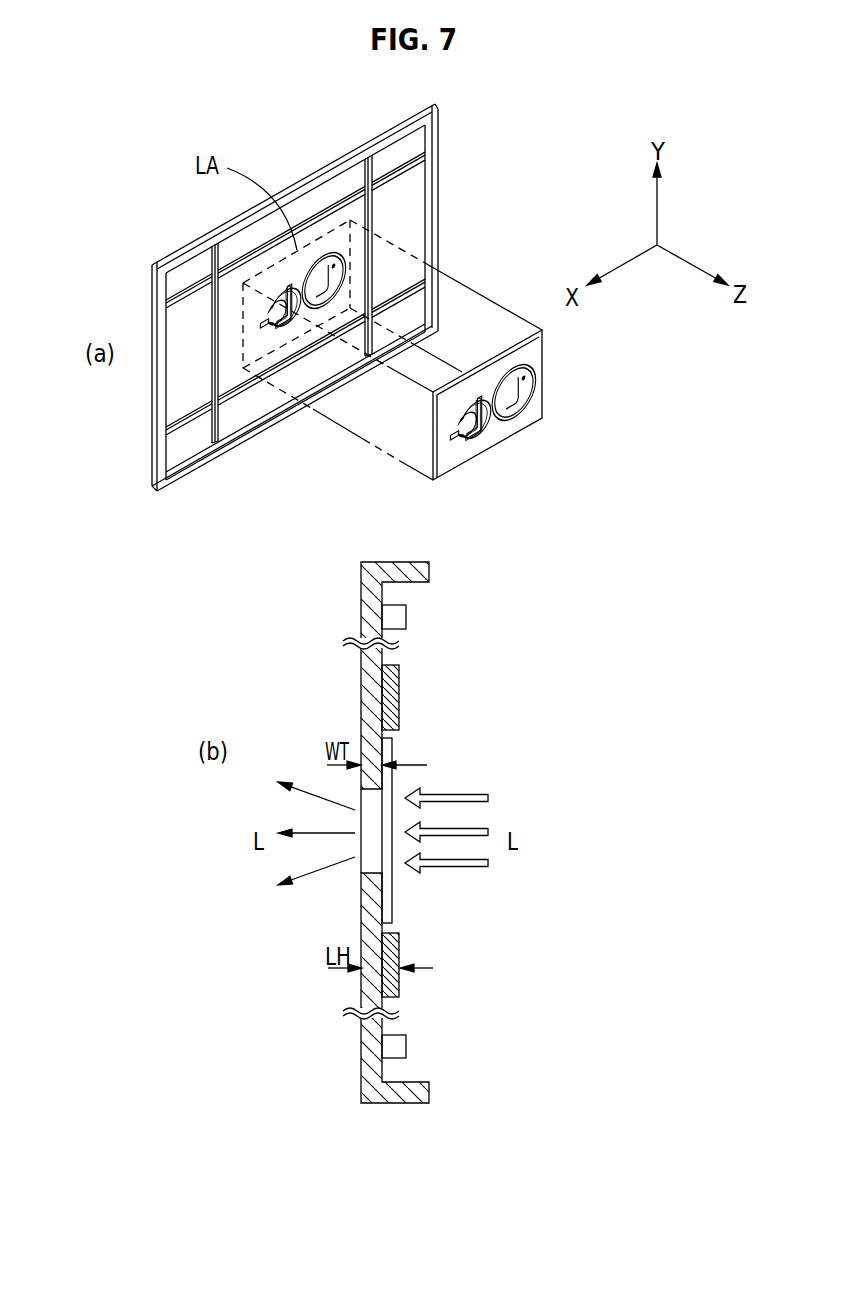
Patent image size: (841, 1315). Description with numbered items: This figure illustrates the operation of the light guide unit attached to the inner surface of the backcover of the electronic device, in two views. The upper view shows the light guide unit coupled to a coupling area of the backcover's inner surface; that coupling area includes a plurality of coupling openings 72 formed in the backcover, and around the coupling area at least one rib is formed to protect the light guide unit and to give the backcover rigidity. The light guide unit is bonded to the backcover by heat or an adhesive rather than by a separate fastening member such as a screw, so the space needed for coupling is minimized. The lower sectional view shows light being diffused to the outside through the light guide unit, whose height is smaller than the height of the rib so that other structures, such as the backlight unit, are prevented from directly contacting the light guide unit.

The coupling openings 72 is at (325, 275).